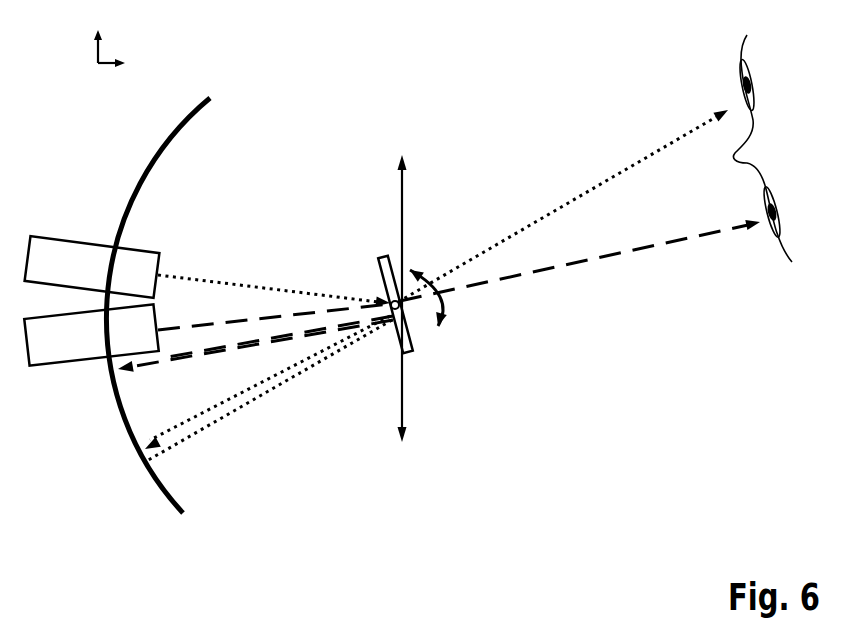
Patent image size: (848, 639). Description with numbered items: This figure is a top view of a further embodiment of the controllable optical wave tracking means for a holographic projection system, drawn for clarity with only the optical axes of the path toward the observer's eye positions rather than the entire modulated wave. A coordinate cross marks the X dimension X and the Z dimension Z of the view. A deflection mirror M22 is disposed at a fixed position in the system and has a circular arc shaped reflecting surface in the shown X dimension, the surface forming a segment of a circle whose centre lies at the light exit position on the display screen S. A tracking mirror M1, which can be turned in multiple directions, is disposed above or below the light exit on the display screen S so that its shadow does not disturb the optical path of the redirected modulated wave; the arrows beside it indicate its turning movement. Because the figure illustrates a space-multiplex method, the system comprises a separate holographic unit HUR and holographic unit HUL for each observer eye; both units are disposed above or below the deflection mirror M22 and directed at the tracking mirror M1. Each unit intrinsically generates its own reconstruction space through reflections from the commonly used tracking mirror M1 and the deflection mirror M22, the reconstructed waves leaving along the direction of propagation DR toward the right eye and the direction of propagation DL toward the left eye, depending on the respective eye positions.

The deflection mirror M22 is at (171, 305).
The tracking mirror M1 is at (380, 300).
The display screen S is at (422, 298).
The holographic unit HUR is at (92, 267).
The holographic unit HUL is at (91, 334).
The direction of propagation DR is at (563, 206).
The direction of propagation DL is at (580, 278).
The X dimension X is at (88, 44).
The Z dimension Z is at (116, 79).